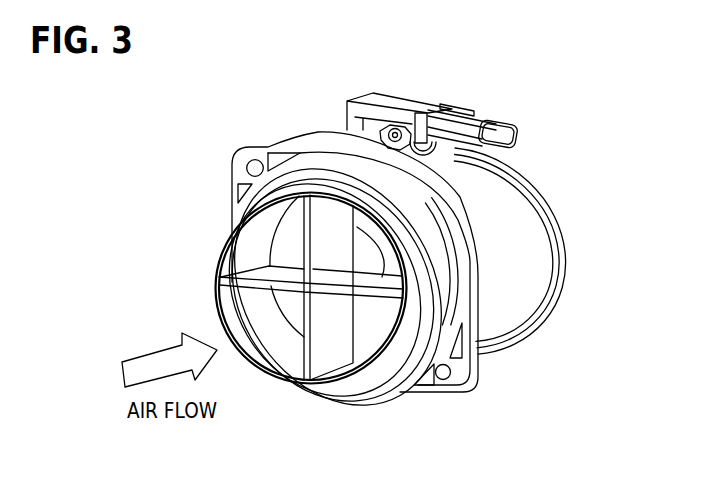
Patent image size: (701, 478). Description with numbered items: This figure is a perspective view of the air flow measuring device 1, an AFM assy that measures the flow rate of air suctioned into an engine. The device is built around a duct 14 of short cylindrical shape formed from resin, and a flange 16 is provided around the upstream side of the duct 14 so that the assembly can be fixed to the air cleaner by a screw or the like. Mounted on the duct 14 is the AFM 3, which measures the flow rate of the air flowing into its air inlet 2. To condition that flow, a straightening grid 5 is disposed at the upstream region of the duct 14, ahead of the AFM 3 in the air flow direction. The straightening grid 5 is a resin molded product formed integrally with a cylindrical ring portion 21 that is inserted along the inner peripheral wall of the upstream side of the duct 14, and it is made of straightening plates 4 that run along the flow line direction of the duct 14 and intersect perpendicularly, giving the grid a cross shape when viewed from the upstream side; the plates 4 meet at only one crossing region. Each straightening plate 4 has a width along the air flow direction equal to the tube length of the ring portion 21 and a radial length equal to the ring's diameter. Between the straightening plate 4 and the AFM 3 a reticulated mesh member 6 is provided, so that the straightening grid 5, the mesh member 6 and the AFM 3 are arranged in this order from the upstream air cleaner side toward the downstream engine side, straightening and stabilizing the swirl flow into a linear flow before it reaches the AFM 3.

The air flow measuring device 1 is at (288, 100).
The air inlet 2 is at (312, 287).
The AFM 3 is at (480, 85).
The straightening plate 4 is at (302, 246).
The straightening grid 5 is at (274, 288).
The mesh member 6 is at (372, 337).
The duct 14 is at (492, 318).
The flange 16 is at (297, 146).
The ring portion 21 is at (247, 213).